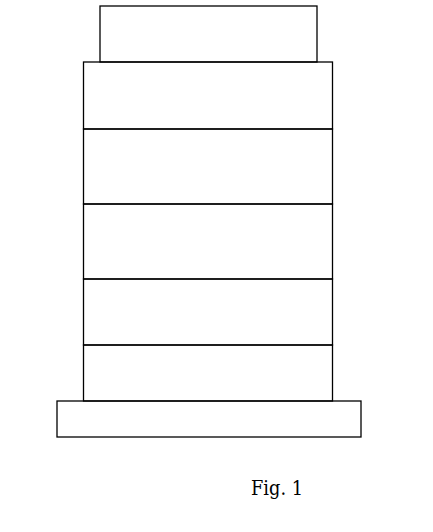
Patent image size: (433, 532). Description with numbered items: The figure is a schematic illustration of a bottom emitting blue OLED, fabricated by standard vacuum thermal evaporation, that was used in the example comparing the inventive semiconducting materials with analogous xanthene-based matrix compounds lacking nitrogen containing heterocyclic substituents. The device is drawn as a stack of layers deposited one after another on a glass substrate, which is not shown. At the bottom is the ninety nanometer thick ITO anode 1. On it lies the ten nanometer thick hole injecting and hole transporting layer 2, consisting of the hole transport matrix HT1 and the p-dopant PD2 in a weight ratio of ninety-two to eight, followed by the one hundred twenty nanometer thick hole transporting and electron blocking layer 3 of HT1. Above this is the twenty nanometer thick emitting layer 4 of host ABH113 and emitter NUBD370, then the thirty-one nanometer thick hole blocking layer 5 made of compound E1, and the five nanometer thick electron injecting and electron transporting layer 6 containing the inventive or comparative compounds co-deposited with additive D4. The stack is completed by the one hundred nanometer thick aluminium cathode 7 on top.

The ITO anode 1 is at (209, 419).
The hole injecting and hole transporting layer 2 is at (208, 373).
The hole transporting and electron blocking layer 3 is at (208, 312).
The emitting layer 4 is at (208, 241).
The hole blocking layer 5 is at (208, 166).
The electron injecting and electron transporting layer 6 is at (208, 95).
The aluminium cathode 7 is at (208, 34).